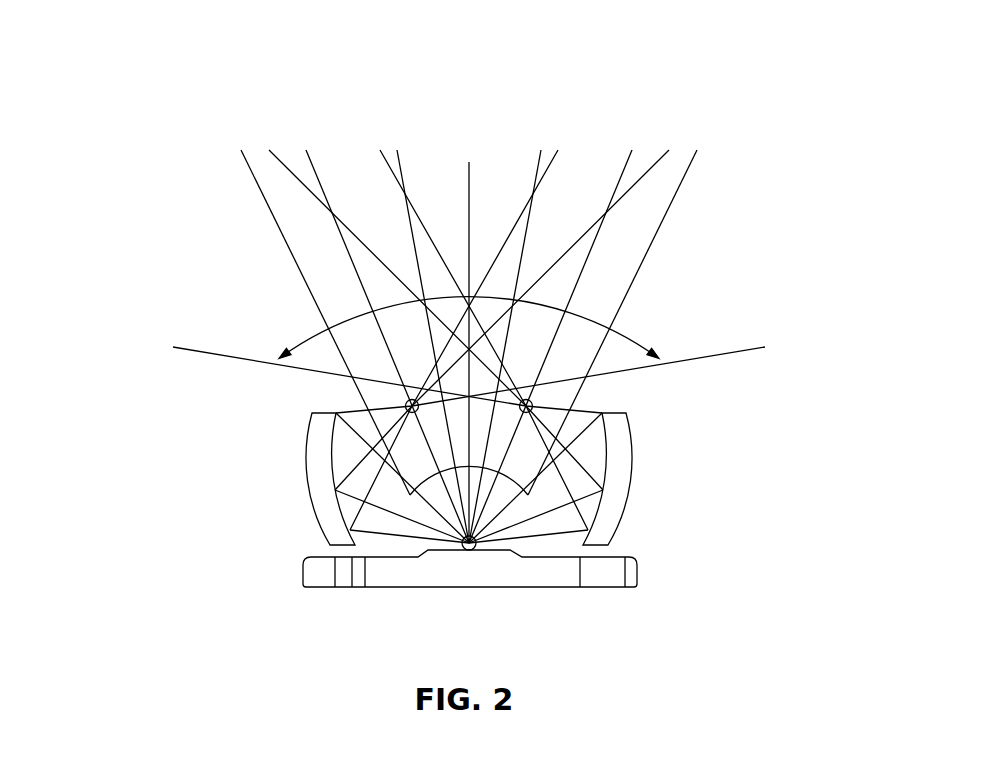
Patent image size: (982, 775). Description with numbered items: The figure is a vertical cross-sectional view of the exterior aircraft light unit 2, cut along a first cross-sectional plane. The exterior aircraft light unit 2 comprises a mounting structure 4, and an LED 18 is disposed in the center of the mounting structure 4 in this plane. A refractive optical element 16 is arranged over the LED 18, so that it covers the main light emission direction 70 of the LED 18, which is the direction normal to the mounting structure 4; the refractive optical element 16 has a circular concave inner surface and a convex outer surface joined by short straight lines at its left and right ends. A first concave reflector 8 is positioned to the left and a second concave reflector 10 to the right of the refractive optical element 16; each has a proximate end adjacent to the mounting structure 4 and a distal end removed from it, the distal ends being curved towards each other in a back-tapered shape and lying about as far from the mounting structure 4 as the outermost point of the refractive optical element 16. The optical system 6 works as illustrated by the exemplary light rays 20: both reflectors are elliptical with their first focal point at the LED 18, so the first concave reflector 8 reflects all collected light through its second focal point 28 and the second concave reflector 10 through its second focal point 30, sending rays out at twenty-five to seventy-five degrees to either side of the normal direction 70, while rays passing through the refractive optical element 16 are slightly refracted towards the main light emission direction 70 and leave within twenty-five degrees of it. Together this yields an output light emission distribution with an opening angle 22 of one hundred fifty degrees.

The exterior aircraft light unit 2 is at (455, 373).
The mounting structure 4 is at (560, 588).
The optical system 6 is at (501, 460).
The first concave reflector 8 is at (305, 465).
The second concave reflector 10 is at (632, 435).
The refractive optical element 16 is at (410, 495).
The LED 18 is at (467, 551).
The exemplary light rays 20 is at (678, 192).
The opening angle 22 is at (323, 333).
The second focal point 28 is at (405, 403).
The second focal point 30 is at (533, 403).
The main light emission direction 70 is at (470, 198).